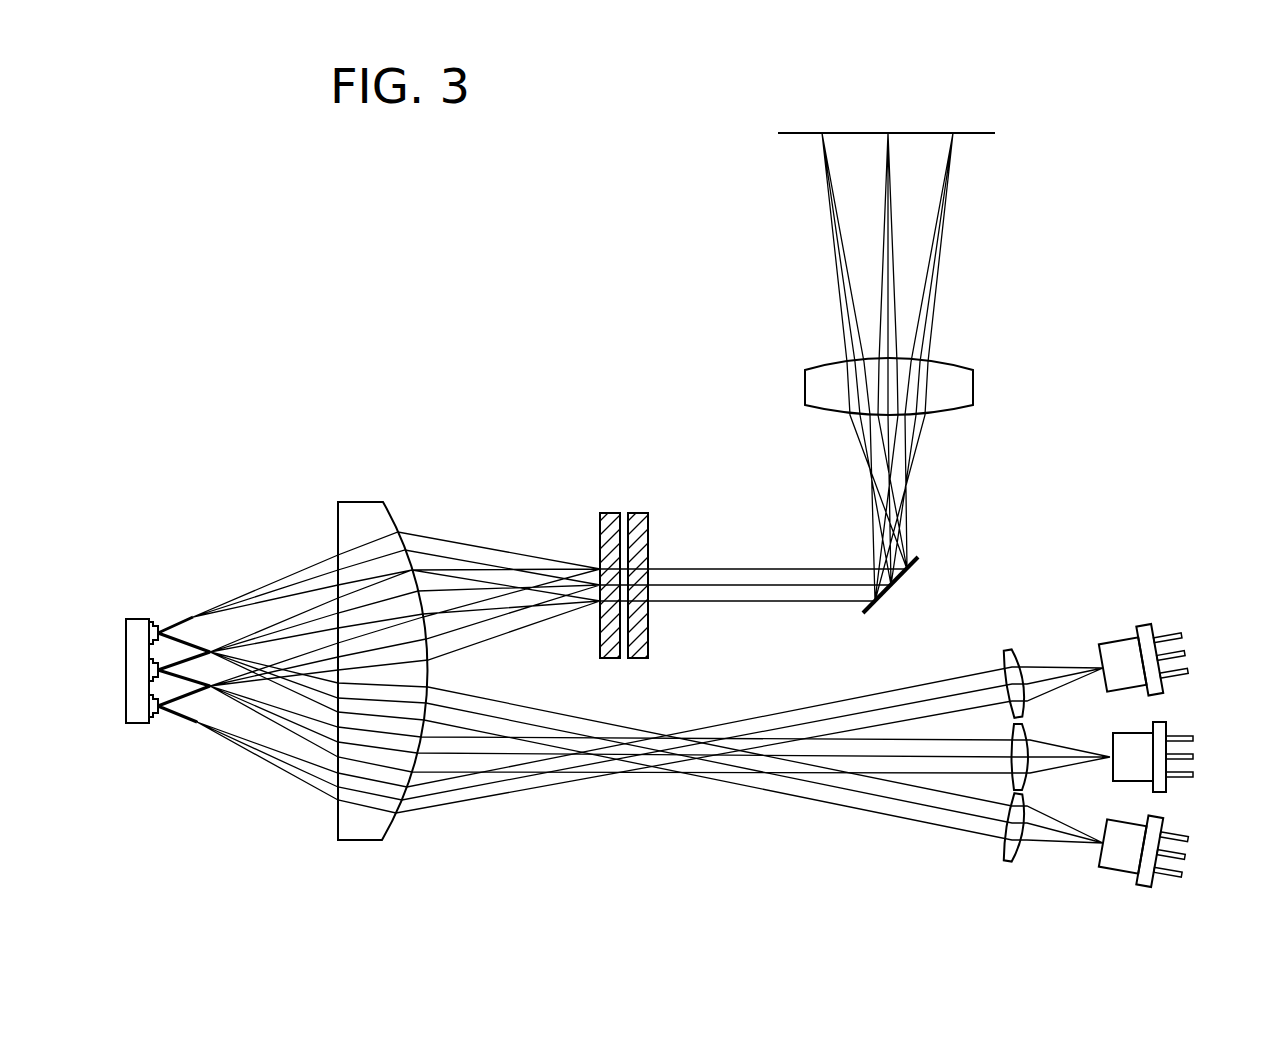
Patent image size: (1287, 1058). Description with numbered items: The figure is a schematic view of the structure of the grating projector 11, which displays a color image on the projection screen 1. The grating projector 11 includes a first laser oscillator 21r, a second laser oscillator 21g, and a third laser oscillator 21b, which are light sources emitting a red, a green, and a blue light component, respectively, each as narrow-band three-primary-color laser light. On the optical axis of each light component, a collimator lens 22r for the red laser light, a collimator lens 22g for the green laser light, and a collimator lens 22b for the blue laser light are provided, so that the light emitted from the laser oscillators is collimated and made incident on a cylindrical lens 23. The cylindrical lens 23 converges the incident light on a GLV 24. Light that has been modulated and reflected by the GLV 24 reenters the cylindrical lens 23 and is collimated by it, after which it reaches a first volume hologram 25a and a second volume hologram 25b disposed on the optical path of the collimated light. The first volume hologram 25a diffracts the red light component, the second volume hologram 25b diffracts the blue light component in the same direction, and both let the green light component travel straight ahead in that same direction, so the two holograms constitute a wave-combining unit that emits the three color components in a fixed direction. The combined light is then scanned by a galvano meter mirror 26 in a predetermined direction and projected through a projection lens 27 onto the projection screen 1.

The projection screen 1 is at (933, 133).
The grating projector 11 is at (489, 384).
The third laser oscillator 21b is at (1118, 660).
The second laser oscillator 21g is at (1133, 747).
The first laser oscillator 21r is at (1128, 862).
The collimator lens for the blue laser light component 22b is at (1015, 650).
The collimator lens for the green laser light component 22g is at (1028, 780).
The collimator lens for the red laser light component 22r is at (1015, 861).
The cylindrical lens 23 is at (357, 518).
The GLV 24 is at (132, 633).
The first volume hologram 25a is at (612, 513).
The second volume hologram 25b is at (637, 513).
The galvano meter mirror 26 is at (907, 573).
The projection lens 27 is at (962, 388).